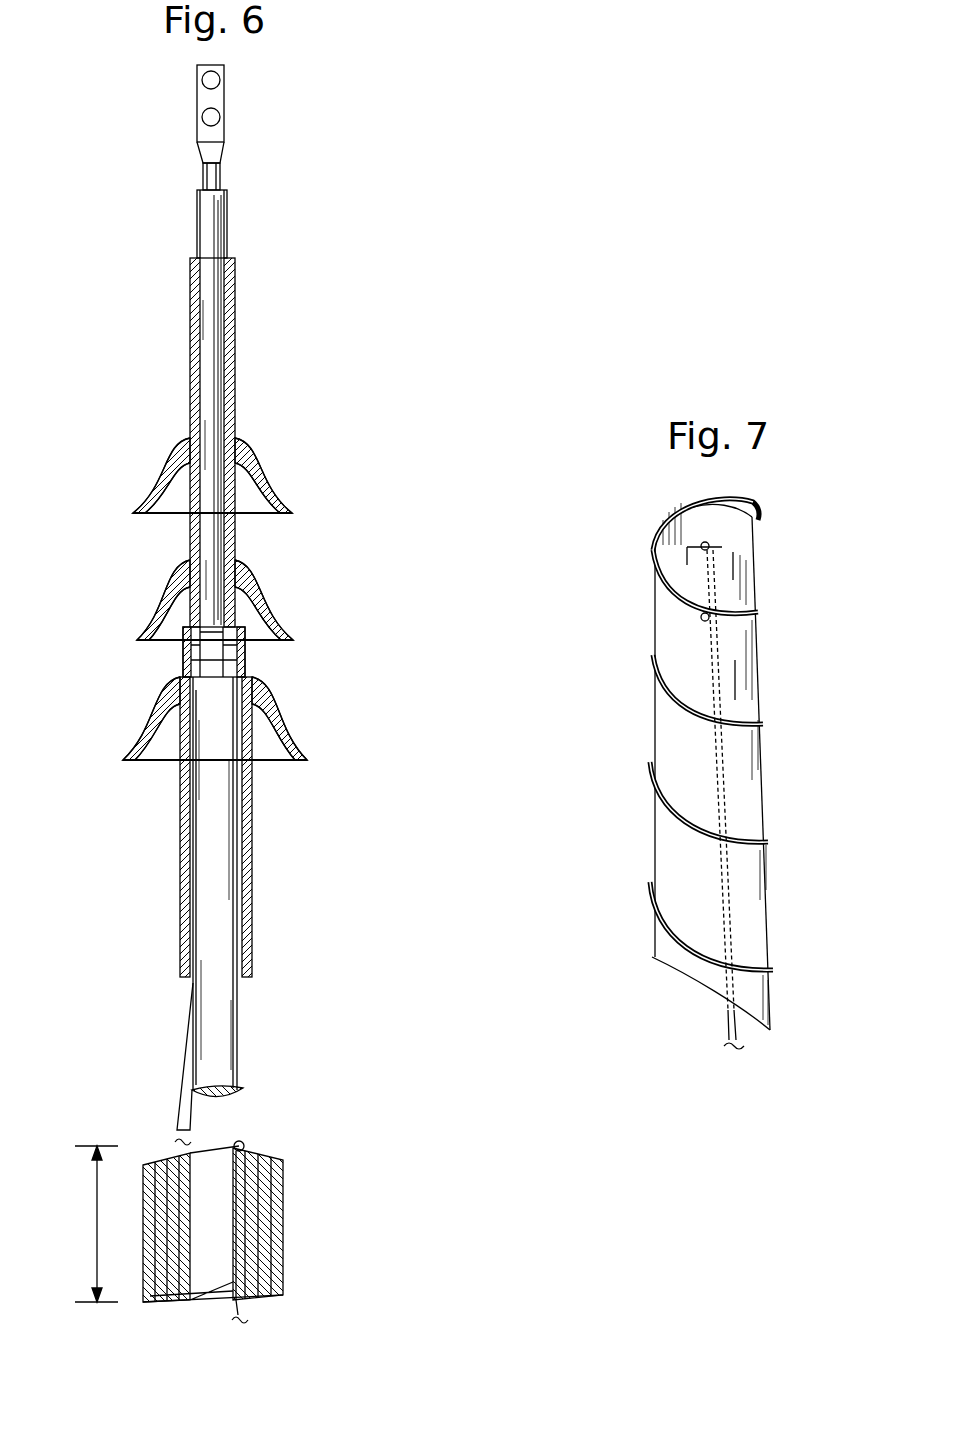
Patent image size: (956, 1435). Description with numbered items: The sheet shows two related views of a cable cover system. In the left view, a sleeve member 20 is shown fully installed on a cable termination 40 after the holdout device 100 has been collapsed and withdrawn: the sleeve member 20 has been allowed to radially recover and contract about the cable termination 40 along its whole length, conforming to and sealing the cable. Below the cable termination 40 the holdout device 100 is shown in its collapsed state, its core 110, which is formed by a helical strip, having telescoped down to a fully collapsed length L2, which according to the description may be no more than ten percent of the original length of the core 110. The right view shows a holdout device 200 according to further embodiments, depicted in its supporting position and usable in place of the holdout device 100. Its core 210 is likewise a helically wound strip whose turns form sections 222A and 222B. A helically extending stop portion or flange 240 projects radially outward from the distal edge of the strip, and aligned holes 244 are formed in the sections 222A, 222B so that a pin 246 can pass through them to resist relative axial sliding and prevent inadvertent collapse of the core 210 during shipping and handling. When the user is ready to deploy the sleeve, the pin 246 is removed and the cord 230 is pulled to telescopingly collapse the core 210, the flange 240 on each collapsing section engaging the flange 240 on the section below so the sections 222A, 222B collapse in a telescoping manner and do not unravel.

In FIG. 6, the cable termination 40 is at (252, 146).
In FIG. 6, the sleeve member 20 is at (232, 372).
In FIG. 6, the holdout device 100 is at (300, 1198).
In FIG. 6, the core 110 is at (291, 1236).
In FIG. 6, the fully collapsed length L2 is at (96, 1224).
In FIG. 7, the holdout device 200 is at (695, 778).
In FIG. 7, the core 210 is at (627, 862).
In FIG. 7, the section 222A is at (733, 565).
In FIG. 7, the section 222B is at (735, 683).
In FIG. 7, the stop portion or flange 240 is at (683, 713).
In FIG. 7, the holes 244 is at (717, 622).
In FIG. 7, the pin 246 is at (703, 617).
In FIG. 7, the cord 230 is at (730, 1012).